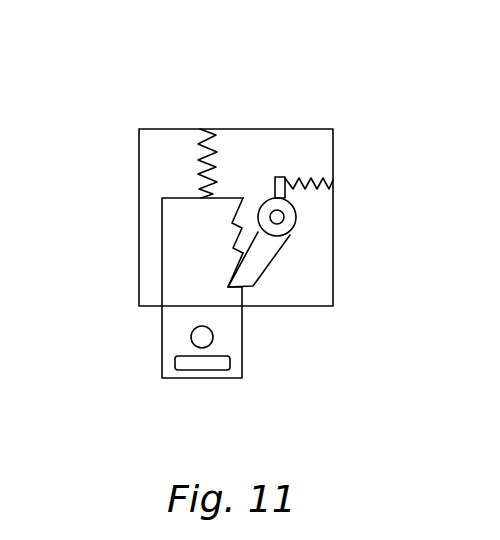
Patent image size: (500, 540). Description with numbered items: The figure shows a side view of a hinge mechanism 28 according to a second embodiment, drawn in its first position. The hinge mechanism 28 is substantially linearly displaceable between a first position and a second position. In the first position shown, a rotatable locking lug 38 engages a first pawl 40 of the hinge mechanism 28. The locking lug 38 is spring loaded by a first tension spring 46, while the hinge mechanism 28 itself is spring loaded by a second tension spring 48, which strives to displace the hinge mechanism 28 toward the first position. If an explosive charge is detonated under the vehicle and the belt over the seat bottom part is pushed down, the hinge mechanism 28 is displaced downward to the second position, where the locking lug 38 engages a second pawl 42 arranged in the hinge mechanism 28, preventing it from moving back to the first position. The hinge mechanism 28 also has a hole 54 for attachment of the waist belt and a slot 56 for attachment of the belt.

The hinge mechanism 28 is at (162, 315).
The locking lug 38 is at (265, 258).
The first pawl 40 is at (230, 288).
The second pawl 42 is at (240, 258).
The first tension spring 46 is at (308, 178).
The second tension spring 48 is at (215, 152).
The hole 54 is at (213, 337).
The slot 56 is at (165, 375).